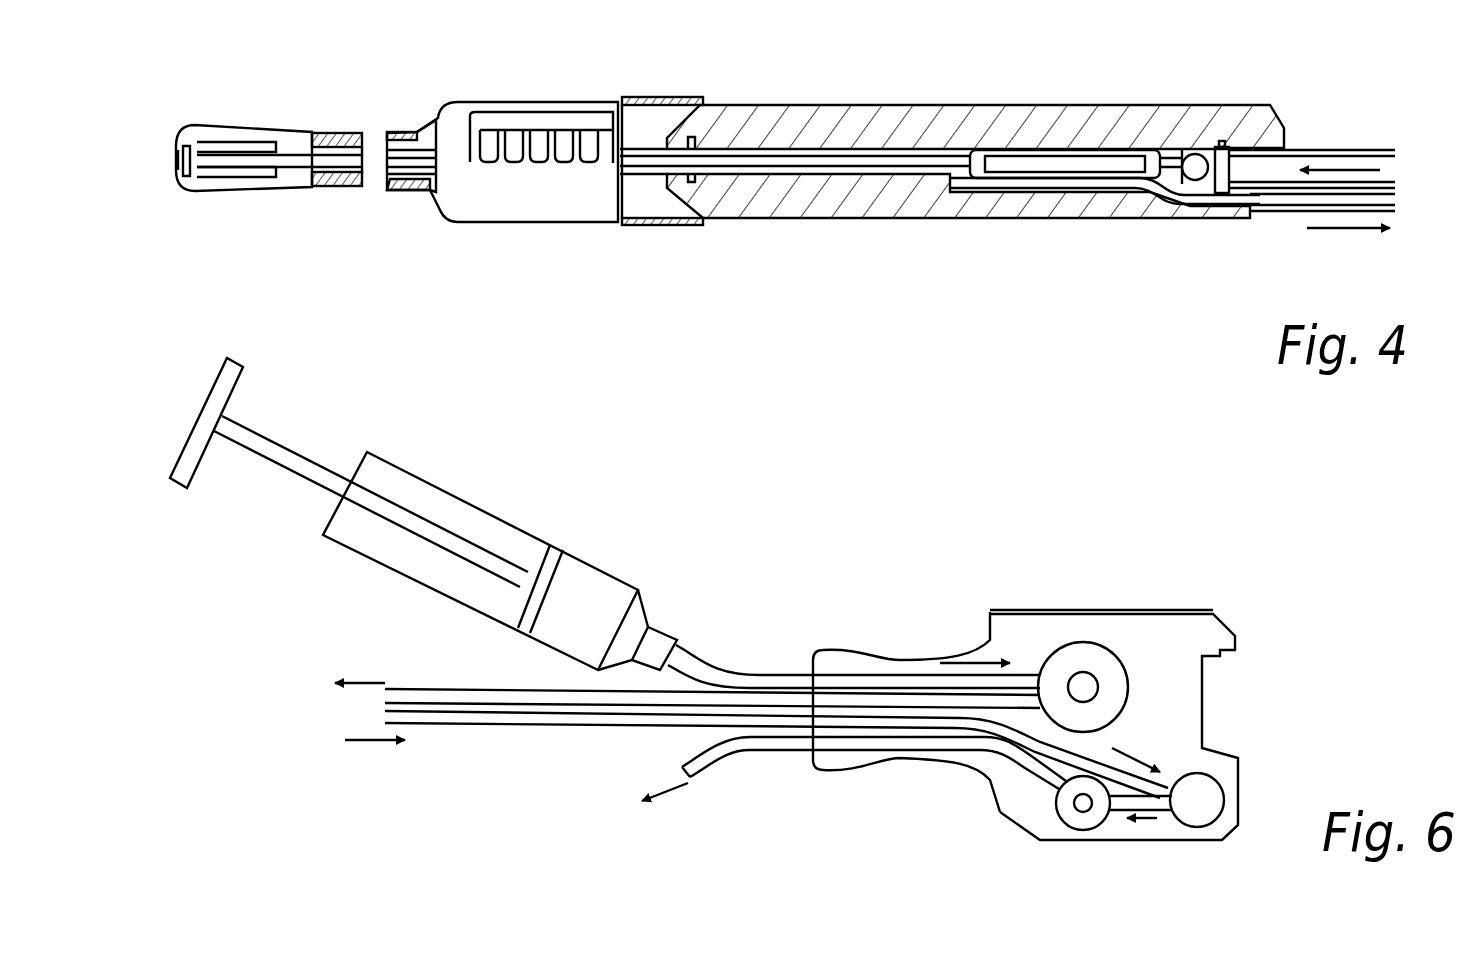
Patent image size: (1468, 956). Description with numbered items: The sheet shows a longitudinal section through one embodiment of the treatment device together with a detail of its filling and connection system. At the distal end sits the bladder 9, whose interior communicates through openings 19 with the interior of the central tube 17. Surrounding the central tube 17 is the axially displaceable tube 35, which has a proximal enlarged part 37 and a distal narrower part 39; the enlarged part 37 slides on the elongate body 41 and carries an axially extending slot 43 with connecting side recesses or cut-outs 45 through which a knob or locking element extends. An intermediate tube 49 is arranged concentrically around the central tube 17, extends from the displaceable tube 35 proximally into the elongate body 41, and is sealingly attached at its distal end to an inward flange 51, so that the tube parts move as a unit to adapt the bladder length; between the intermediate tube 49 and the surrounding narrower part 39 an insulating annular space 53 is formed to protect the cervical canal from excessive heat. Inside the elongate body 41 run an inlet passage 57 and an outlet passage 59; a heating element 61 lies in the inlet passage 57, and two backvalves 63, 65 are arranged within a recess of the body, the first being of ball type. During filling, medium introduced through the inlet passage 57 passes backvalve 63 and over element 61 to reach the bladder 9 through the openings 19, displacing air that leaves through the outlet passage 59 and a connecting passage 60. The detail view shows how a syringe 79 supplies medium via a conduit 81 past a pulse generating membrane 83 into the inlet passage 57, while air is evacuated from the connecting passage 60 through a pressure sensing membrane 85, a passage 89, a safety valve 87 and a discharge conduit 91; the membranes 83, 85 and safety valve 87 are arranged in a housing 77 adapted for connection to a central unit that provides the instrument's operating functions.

In FIG. 4, the bladder 9 is at (244, 131).
In FIG. 4, the central tube 17 is at (297, 155).
In FIG. 4, the openings 19 is at (186, 173).
In FIG. 4, the axially displaceable tube 35 is at (493, 103).
In FIG. 4, the proximal enlarged part 37 is at (657, 98).
In FIG. 4, the distal narrower part 39 is at (402, 132).
In FIG. 4, the elongate body 41 is at (893, 128).
In FIG. 4, the axially extending slot 43 is at (546, 122).
In FIG. 4, the side recesses or cut-outs 45 is at (536, 162).
In FIG. 4, the intermediate tube 49 is at (395, 190).
In FIG. 4, the inward flange 51 is at (314, 190).
In FIG. 4, the insulating annular space 53 is at (340, 183).
In FIG. 4, the inlet passage 57 is at (1290, 168).
In FIG. 6, the inlet passage 57 is at (496, 700).
In FIG. 4, the outlet passage 59 is at (1060, 190).
In FIG. 4, the connecting passage 60 is at (1326, 208).
In FIG. 6, the connecting passage 60 is at (556, 727).
In FIG. 4, the heating element 61 is at (1048, 162).
In FIG. 4, the backvalve 63 is at (1198, 162).
In FIG. 4, the backvalve 65 is at (1240, 160).
In FIG. 6, the housing 77 is at (1186, 636).
In FIG. 6, the syringe 79 is at (514, 486).
In FIG. 6, the passage or conduit 81 is at (860, 668).
In FIG. 6, the pulse generating membrane 83 is at (1075, 660).
In FIG. 6, the pressure sensing membrane 85 is at (1208, 800).
In FIG. 6, the safety valve 87 is at (1066, 806).
In FIG. 6, the passage 89 is at (1142, 814).
In FIG. 6, the discharge conduit 91 is at (776, 750).